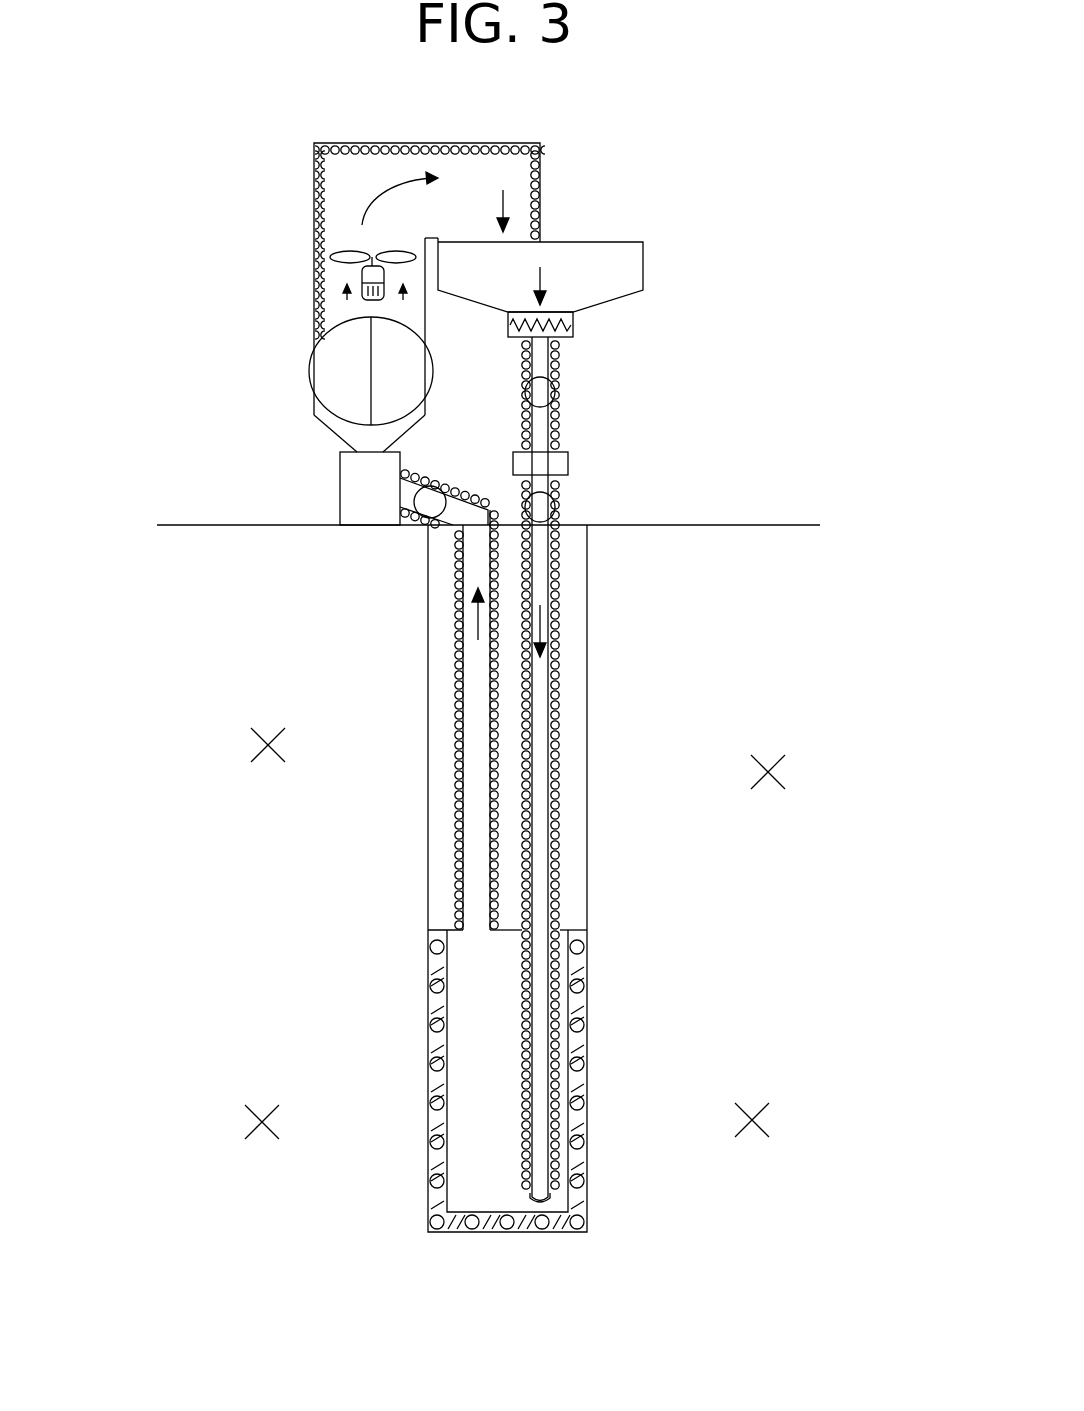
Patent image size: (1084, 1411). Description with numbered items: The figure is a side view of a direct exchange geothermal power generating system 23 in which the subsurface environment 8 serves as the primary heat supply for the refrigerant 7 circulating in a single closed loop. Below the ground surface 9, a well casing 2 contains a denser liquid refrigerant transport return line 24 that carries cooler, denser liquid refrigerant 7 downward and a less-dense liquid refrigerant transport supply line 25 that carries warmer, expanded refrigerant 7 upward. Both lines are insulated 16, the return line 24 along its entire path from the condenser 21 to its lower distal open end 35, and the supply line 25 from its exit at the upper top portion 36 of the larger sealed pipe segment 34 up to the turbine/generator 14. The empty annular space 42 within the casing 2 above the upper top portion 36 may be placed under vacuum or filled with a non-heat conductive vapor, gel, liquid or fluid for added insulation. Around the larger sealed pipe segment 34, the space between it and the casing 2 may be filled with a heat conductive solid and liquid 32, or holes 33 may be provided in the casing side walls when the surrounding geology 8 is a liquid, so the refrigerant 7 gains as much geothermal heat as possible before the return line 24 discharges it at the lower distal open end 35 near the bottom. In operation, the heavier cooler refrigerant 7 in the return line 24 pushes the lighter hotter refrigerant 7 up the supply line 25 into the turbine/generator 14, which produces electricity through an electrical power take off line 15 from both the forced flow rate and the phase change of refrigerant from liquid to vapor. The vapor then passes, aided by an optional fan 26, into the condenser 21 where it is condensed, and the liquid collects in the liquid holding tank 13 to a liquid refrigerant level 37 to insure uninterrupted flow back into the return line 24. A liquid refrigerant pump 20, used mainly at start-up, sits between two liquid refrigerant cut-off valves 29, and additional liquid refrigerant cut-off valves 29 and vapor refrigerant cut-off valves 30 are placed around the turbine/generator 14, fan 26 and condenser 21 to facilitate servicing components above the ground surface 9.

The well casing 2 is at (590, 853).
The refrigerant 7 is at (328, 188).
The subsurface environment 8 is at (268, 745).
The ground surface 9 is at (745, 525).
The liquid holding tank 13 is at (577, 335).
The turbine/generator 14 is at (338, 505).
The electrical power take off line 15 is at (335, 468).
The insulation 16 is at (314, 236).
The liquid refrigerant pump 20 is at (568, 458).
The condenser 21 is at (643, 277).
The direct exchange geothermal power generating system 23 is at (688, 147).
The denser liquid refrigerant transport return line 24 is at (545, 548).
The less-dense liquid refrigerant transport supply line 25 is at (470, 550).
The fan 26 is at (340, 303).
The liquid refrigerant cut-off valve 29 is at (430, 485).
The vapor refrigerant cut-off valve 30 is at (308, 362).
The heat conductive solid and liquid 32 is at (433, 1010).
The holes 33 is at (433, 990).
The larger sealed pipe segment 34 is at (430, 1190).
The lower distal open end 35 is at (588, 1200).
The upper top portion 36 is at (462, 925).
The liquid refrigerant level 37 is at (577, 318).
The empty annular space 42 is at (510, 575).